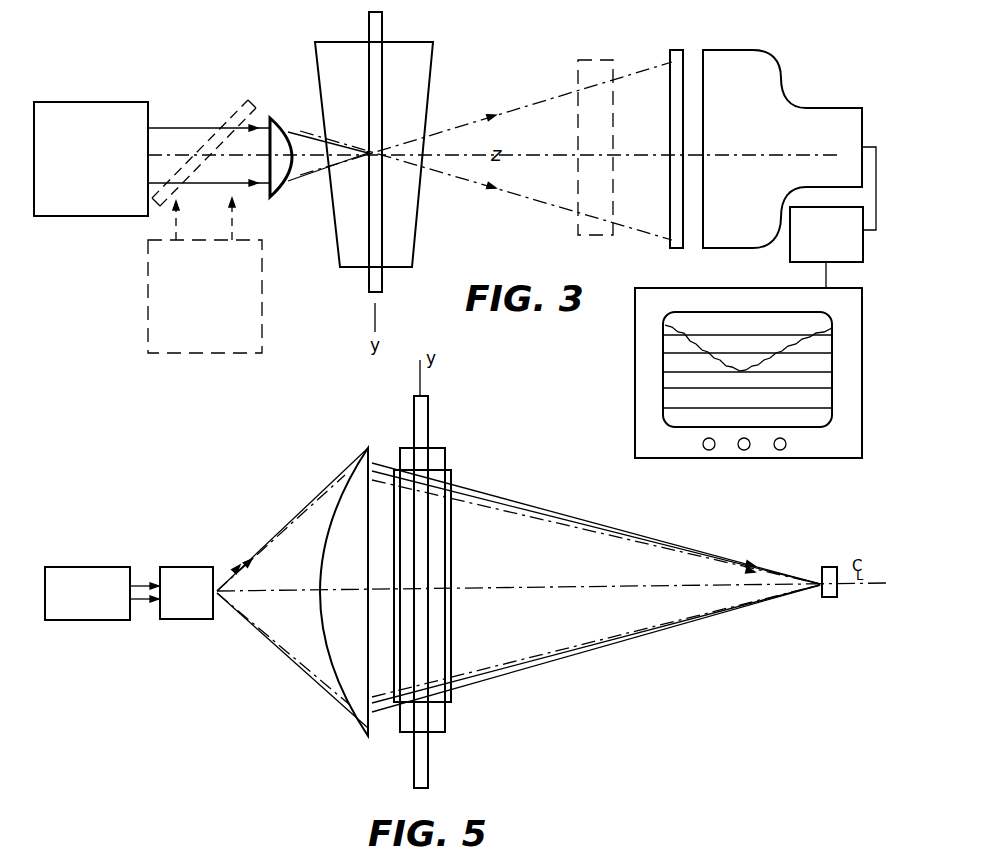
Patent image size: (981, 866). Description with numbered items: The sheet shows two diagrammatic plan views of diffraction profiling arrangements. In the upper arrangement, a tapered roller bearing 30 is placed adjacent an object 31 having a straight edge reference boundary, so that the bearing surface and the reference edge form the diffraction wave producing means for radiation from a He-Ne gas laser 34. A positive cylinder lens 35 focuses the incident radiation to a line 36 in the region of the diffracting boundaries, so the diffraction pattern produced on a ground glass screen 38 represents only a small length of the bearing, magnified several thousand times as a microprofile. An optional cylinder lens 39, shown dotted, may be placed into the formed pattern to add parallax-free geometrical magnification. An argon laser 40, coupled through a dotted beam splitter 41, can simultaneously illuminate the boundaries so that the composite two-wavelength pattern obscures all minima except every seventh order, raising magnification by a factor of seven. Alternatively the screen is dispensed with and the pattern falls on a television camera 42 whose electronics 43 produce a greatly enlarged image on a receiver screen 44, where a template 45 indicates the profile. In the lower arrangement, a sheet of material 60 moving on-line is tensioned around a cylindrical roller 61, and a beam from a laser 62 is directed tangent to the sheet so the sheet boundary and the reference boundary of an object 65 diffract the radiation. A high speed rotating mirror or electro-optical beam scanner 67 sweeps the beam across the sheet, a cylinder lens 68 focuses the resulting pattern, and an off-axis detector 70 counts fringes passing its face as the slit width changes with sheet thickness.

In FIG. 3, the tapered roller bearing 30 is at (398, 235).
In FIG. 3, the object 31 is at (380, 277).
In FIG. 3, the He-Ne gas laser 34 is at (99, 166).
In FIG. 3, the positive cylinder lens 35 is at (277, 117).
In FIG. 3, the line 36 is at (366, 156).
In FIG. 3, the ground glass screen 38 is at (672, 58).
In FIG. 3, the optional cylinder lens 39 is at (578, 75).
In FIG. 3, the argon laser 40 is at (218, 308).
In FIG. 3, the beam splitter 41 is at (231, 118).
In FIG. 3, the television camera 42 is at (826, 147).
In FIG. 3, the electronics 43 is at (840, 245).
In FIG. 3, the receiver screen 44 is at (826, 458).
In FIG. 3, the template 45 is at (703, 410).
In FIG. 5, the sheet of material 60 is at (447, 698).
In FIG. 5, the cylindrical roller 61 is at (442, 722).
In FIG. 5, the laser 62 is at (102, 606).
In FIG. 5, the object 65 is at (425, 765).
In FIG. 5, the high speed rotating mirror or electro-optical beam scanner 67 is at (200, 606).
In FIG. 5, the cylinder lens 68 is at (367, 727).
In FIG. 5, the detector 70 is at (838, 600).